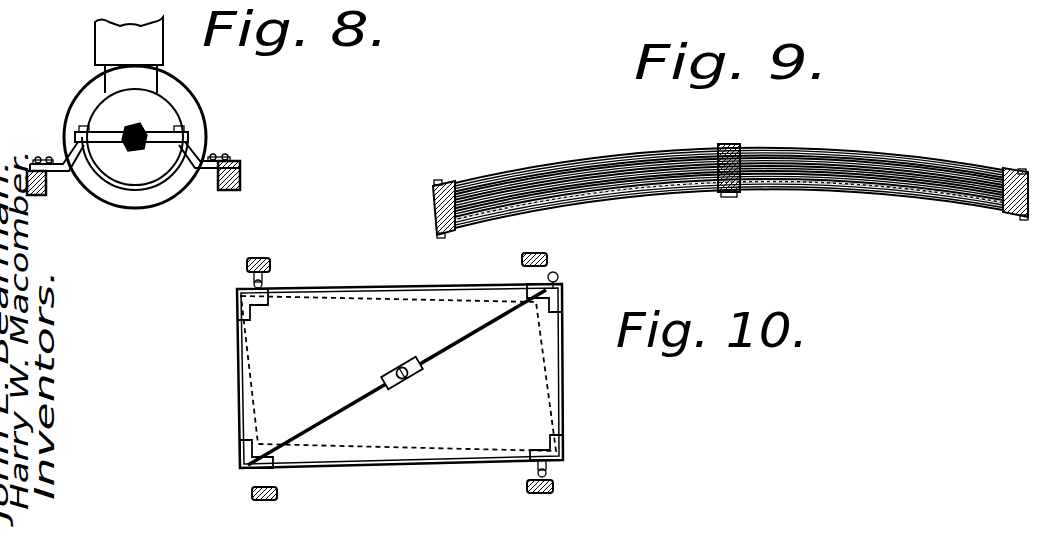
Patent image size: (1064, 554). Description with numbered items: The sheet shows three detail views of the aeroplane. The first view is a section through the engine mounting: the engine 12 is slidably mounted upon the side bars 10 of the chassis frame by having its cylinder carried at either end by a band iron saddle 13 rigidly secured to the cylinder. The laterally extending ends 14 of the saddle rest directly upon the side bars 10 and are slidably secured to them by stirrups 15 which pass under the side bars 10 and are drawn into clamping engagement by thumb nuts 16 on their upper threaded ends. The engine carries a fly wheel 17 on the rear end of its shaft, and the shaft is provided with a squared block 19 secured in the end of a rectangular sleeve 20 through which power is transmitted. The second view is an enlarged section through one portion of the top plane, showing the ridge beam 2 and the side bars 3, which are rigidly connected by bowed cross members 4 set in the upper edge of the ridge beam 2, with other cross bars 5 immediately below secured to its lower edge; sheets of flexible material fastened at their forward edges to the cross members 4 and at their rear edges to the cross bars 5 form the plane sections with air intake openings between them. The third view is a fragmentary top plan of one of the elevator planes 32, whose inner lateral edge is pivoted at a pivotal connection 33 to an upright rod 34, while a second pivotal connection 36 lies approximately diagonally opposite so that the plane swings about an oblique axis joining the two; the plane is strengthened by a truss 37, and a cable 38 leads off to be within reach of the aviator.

In FIG. 9, the ridge beam 2 is at (735, 146).
In FIG. 9, the side bars 3 is at (433, 210).
In FIG. 9, the bowed cross members 4 is at (822, 150).
In FIG. 9, the cross bars 5 is at (684, 190).
In FIG. 8, the side bars 10 is at (30, 184).
In FIG. 8, the engine 12 is at (129, 55).
In FIG. 8, the band iron saddle 13 is at (108, 182).
In FIG. 8, the laterally extending ends 14 is at (40, 154).
In FIG. 8, the stirrups 15 is at (46, 184).
In FIG. 8, the thumb nuts 16 is at (42, 157).
In FIG. 8, the fly wheel 17 is at (178, 96).
In FIG. 8, the squared block 19 is at (130, 135).
In FIG. 8, the rectangular sleeve 20 is at (140, 135).
In FIG. 10, the elevator planes 32 is at (400, 392).
In FIG. 10, the pivotal connection 33 is at (247, 266).
In FIG. 10, the upright rod 34 is at (257, 258).
In FIG. 10, the second pivotal connection 36 is at (549, 468).
In FIG. 10, the truss 37 is at (436, 358).
In FIG. 10, the cable 38 is at (560, 274).